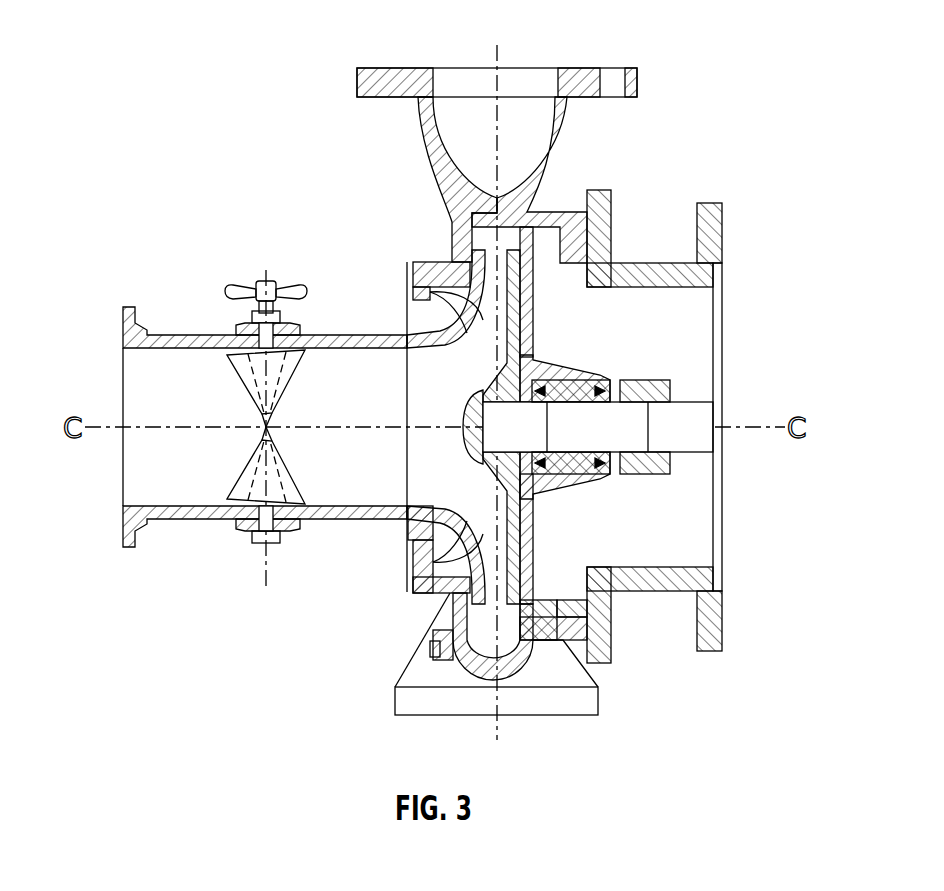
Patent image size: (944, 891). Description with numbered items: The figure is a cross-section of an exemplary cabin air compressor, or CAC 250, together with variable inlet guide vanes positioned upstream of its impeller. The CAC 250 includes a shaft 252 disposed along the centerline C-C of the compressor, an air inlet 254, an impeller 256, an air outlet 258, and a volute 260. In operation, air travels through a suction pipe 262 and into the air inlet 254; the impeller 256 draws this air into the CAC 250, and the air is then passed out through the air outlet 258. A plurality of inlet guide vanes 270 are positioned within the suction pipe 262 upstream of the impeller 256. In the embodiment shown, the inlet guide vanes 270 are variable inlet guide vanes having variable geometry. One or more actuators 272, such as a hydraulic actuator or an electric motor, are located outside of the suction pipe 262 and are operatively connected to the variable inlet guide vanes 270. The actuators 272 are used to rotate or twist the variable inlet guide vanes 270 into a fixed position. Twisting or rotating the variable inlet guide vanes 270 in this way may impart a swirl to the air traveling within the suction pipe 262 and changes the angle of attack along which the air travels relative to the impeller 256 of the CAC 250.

The cabin air compressor 250 is at (688, 346).
The shaft 252 is at (698, 414).
The air inlet 254 is at (356, 358).
The impeller 256 is at (460, 300).
The air outlet 258 is at (482, 242).
The volute 260 is at (527, 84).
The suction pipe 262 is at (194, 399).
The inlet guide vanes 270 is at (287, 396).
The actuator 272 is at (248, 288).